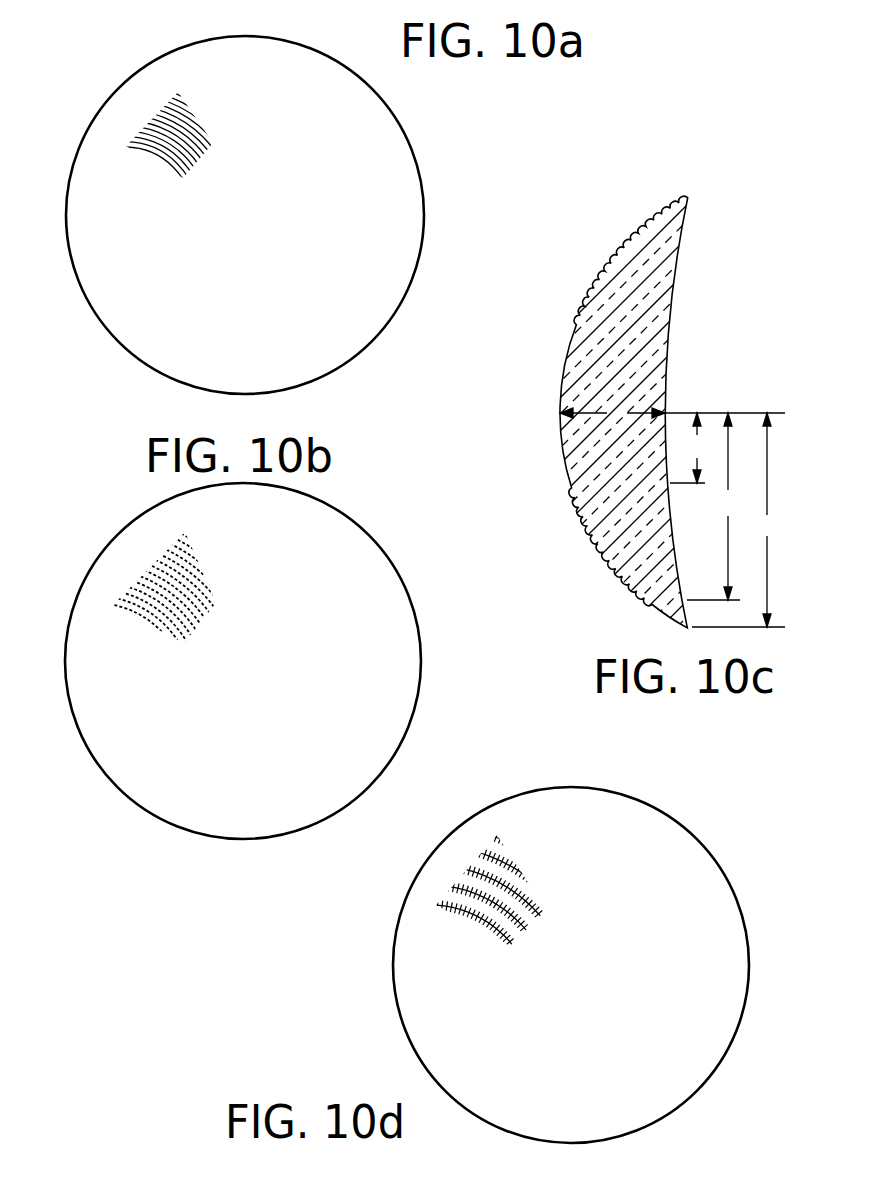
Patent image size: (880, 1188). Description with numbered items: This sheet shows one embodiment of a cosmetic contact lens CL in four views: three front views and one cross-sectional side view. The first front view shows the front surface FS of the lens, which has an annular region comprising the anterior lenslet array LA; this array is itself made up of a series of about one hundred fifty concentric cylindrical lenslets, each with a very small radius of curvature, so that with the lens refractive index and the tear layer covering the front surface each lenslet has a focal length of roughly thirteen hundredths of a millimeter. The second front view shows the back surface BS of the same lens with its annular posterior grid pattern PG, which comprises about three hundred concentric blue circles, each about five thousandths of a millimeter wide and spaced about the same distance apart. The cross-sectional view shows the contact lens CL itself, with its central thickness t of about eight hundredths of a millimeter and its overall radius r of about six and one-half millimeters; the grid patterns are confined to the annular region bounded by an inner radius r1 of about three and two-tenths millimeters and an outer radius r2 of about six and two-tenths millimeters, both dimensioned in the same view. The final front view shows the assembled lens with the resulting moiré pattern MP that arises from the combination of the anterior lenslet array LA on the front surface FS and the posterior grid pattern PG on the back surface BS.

In FIG. 10A, the anterior lenslet array LA is at (157, 136).
In FIG. 10C, the anterior lenslet array LA is at (591, 276).
In FIG. 10A, the front surface FS is at (329, 129).
In FIG. 10B, the posterior grid pattern PG is at (136, 580).
In FIG. 10C, the posterior grid pattern PG is at (677, 306).
In FIG. 10B, the back surface BS is at (329, 591).
In FIG. 10D, the moiré pattern MP is at (481, 843).
In FIG. 10C, the contact lens CL is at (561, 400).
In FIG. 10C, the central thickness t is at (612, 413).
In FIG. 10C, the inner radius of the annular region r1 is at (725, 448).
In FIG. 10C, the outer radius of the annular region r2 is at (715, 506).
In FIG. 10C, the lens radius r is at (738, 520).